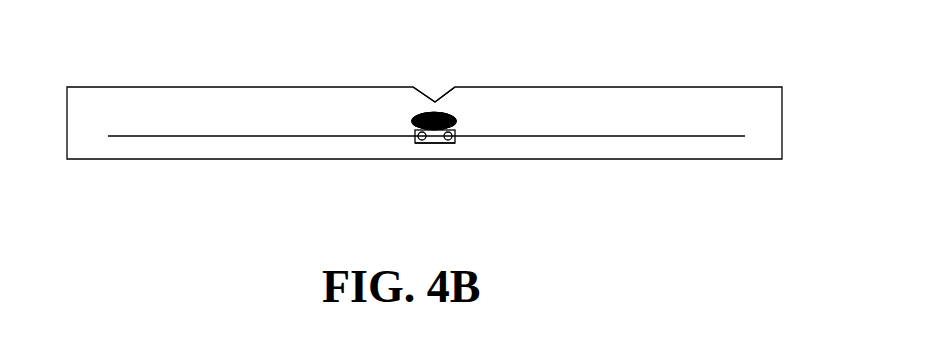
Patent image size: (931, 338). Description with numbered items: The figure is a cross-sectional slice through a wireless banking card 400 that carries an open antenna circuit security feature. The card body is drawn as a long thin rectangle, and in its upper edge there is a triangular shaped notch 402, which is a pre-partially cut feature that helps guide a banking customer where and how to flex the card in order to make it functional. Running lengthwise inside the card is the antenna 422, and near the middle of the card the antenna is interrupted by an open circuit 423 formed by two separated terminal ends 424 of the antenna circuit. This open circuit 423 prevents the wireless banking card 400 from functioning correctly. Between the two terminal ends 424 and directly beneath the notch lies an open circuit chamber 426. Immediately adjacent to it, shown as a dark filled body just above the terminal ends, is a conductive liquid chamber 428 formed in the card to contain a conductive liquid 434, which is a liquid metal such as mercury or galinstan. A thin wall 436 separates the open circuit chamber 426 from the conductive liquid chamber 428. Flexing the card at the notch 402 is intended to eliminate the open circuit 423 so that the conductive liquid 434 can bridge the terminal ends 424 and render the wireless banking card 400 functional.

The wireless banking card 400 is at (305, 87).
The triangular shaped notch 402 is at (435, 82).
The antenna 422 is at (245, 136).
The open circuit 423 is at (401, 147).
The terminal ends 424 is at (447, 141).
The open circuit chamber 426 is at (434, 140).
The conductive liquid chamber 428 is at (398, 116).
The conductive liquid 434 is at (457, 119).
The thin wall 436 is at (472, 128).